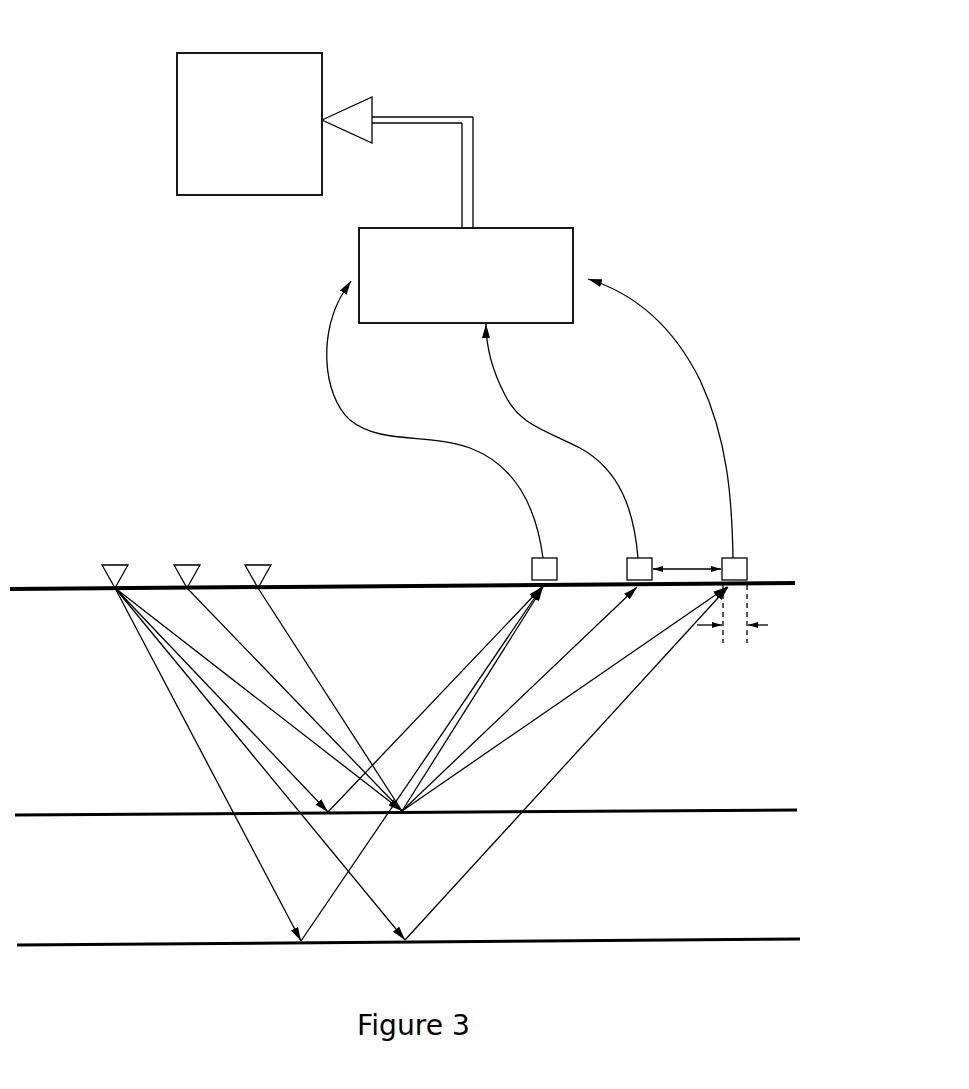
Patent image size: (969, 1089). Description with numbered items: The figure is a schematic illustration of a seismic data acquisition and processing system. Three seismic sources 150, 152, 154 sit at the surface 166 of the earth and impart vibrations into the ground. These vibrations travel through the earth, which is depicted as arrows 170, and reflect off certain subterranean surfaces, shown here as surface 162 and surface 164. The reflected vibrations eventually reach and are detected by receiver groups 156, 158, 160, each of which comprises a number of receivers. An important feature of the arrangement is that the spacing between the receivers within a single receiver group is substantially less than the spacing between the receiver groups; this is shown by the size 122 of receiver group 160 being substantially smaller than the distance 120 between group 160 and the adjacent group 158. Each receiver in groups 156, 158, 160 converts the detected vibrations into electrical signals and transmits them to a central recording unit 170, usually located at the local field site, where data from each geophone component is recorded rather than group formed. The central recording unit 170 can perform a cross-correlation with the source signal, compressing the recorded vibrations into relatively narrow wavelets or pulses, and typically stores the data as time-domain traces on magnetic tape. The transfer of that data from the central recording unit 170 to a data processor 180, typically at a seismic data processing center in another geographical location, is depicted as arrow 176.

The distance between receiver groups 120 is at (687, 567).
The size of receiver group 122 is at (747, 632).
The seismic source 150 is at (117, 563).
The seismic source 152 is at (188, 563).
The seismic source 154 is at (260, 563).
The receiver group 156 is at (532, 573).
The receiver group 158 is at (627, 573).
The receiver group 160 is at (747, 563).
The subterranean surface 162 is at (120, 813).
The subterranean surface 164 is at (145, 942).
The earth surface 166 is at (400, 583).
The central recording unit 170 is at (417, 271).
The data transfer arrow 176 is at (415, 120).
The data processor 180 is at (260, 177).